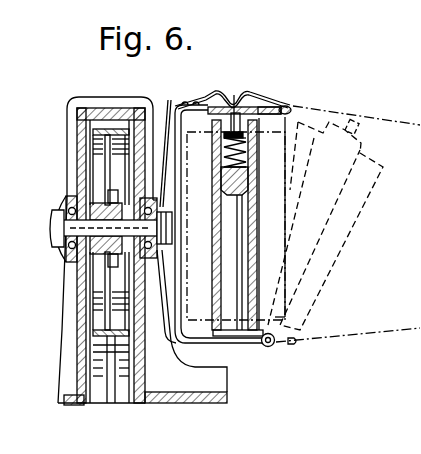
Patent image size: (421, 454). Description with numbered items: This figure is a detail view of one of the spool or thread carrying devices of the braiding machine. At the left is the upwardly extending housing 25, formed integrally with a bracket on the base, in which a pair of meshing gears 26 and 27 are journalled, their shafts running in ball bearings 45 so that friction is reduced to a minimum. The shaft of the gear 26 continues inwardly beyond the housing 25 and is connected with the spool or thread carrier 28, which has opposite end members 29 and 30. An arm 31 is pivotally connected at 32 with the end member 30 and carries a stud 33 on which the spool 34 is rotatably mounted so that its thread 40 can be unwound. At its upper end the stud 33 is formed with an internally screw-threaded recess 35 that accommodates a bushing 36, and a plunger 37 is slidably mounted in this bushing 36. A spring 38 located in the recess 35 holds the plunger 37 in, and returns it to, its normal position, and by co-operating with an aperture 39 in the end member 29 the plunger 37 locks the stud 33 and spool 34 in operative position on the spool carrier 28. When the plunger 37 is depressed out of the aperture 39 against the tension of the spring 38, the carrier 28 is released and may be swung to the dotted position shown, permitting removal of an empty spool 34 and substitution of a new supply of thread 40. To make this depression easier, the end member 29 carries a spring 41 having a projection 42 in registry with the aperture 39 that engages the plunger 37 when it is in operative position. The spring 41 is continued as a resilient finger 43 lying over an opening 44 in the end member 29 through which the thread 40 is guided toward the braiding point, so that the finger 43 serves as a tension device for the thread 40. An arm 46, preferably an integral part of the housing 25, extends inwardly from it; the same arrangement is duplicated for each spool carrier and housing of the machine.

The housing 25 is at (78, 297).
The gear 26 is at (93, 146).
The gear 27 is at (110, 375).
The spool or thread carrier 28 is at (175, 252).
The end member 29 is at (264, 108).
The end member 30 is at (243, 345).
The arm 31 is at (223, 335).
The pivot 32 is at (272, 345).
The stud 33 is at (228, 212).
The spool 34 is at (257, 212).
The recess 35 is at (291, 231).
The bushing 36 is at (252, 108).
The plunger 37 is at (211, 121).
The spring 38 is at (225, 153).
The aperture 39 is at (240, 129).
The thread 40 is at (338, 113).
The spring 41 is at (216, 93).
The projection 42 is at (229, 100).
The resilient finger 43 is at (291, 108).
The opening 44 is at (288, 104).
The ball bearings 45 is at (56, 217).
The arm 46 is at (173, 397).